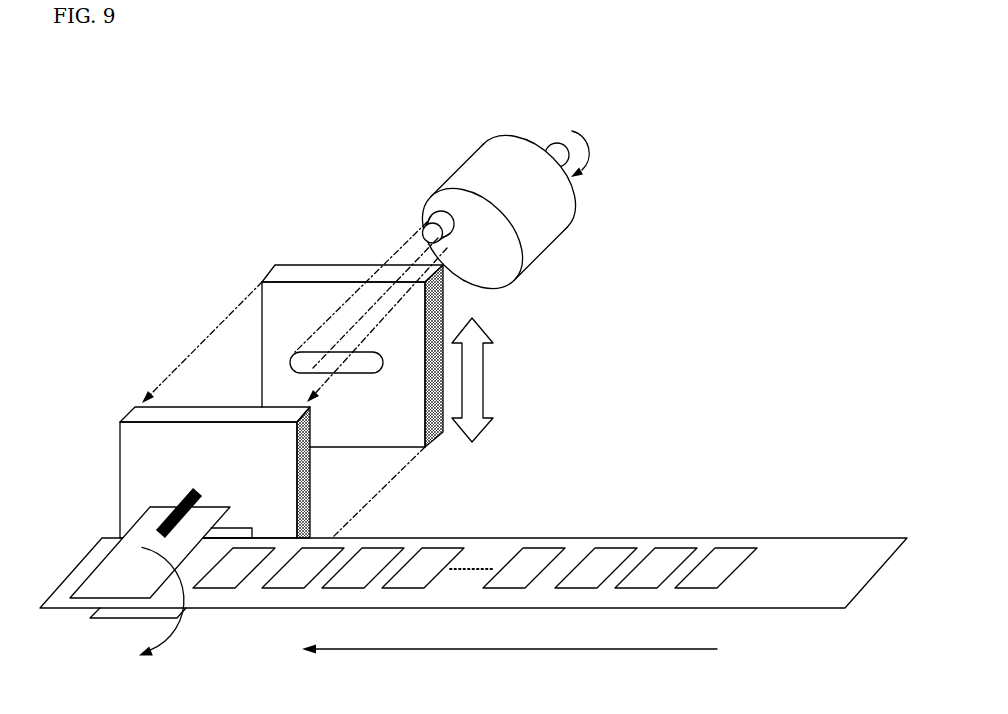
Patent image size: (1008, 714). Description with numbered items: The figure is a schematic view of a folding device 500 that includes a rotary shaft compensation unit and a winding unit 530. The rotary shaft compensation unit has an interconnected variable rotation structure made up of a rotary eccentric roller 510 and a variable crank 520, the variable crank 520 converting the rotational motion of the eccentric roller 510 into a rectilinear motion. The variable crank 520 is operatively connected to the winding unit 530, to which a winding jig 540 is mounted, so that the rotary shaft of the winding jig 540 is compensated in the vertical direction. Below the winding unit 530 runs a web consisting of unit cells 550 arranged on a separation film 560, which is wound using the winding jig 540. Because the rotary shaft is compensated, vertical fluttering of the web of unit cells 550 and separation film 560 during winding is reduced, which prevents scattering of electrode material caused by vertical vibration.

The folding device 500 is at (75, 119).
The rotary eccentric roller 510 is at (495, 152).
The variable crank 520 is at (337, 273).
The winding unit 530 is at (142, 435).
The winding jig 540 is at (120, 547).
The unit cells 550 is at (537, 560).
The separation film 560 is at (792, 553).